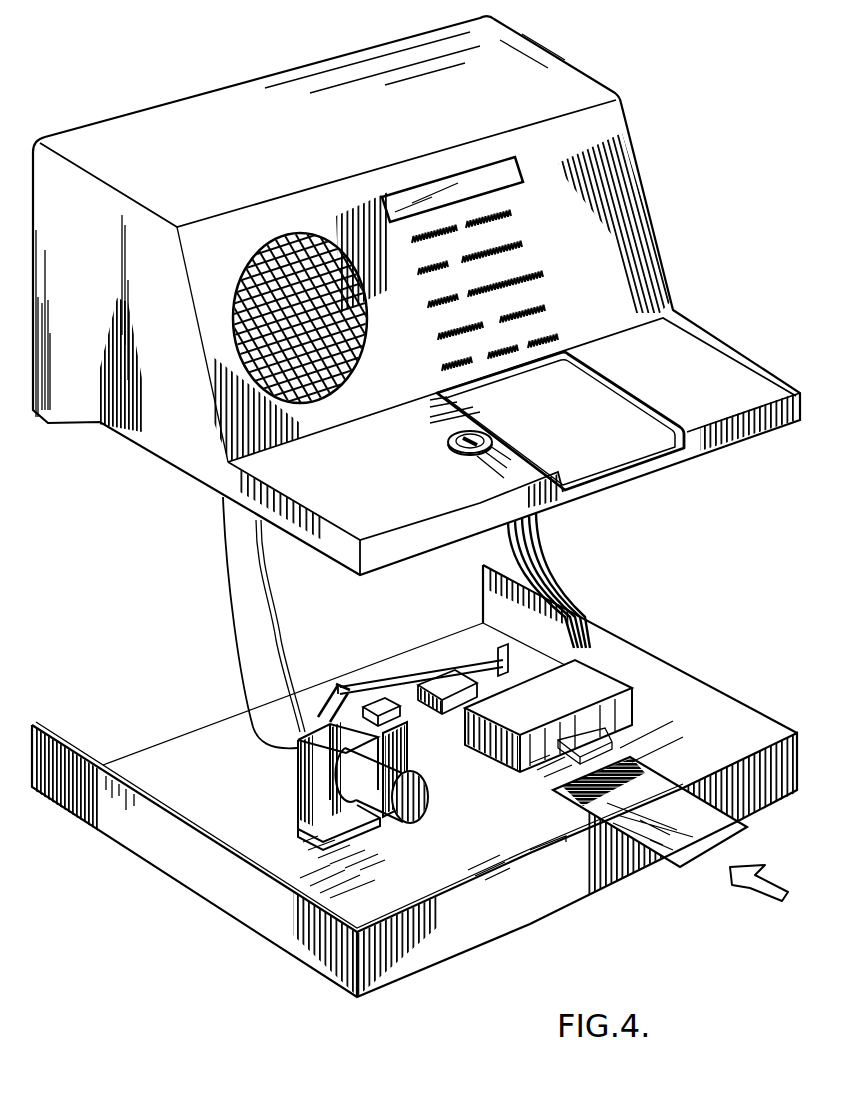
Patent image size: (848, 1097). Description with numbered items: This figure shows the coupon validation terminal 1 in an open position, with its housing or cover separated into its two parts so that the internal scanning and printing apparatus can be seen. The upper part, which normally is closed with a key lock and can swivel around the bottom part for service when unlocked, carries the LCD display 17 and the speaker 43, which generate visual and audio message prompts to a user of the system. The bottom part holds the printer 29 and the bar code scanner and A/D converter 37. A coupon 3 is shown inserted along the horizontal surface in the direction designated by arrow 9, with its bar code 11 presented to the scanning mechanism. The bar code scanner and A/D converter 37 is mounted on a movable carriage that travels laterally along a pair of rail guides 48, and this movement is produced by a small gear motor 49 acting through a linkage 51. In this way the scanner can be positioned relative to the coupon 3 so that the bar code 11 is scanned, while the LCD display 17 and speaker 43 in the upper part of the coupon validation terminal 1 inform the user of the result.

The coupon validation terminal 1 is at (416, 292).
The coupon 3 is at (712, 820).
The arrow 9 is at (756, 885).
The bar code 11 is at (655, 748).
The LCD display 17 is at (490, 170).
The printer 29 is at (598, 675).
The bar code scanner and A/D converter 37 is at (455, 705).
The speaker 43 is at (242, 353).
The rail guides 48 is at (500, 657).
The gear motor 49 is at (300, 796).
The linkage 51 is at (370, 690).